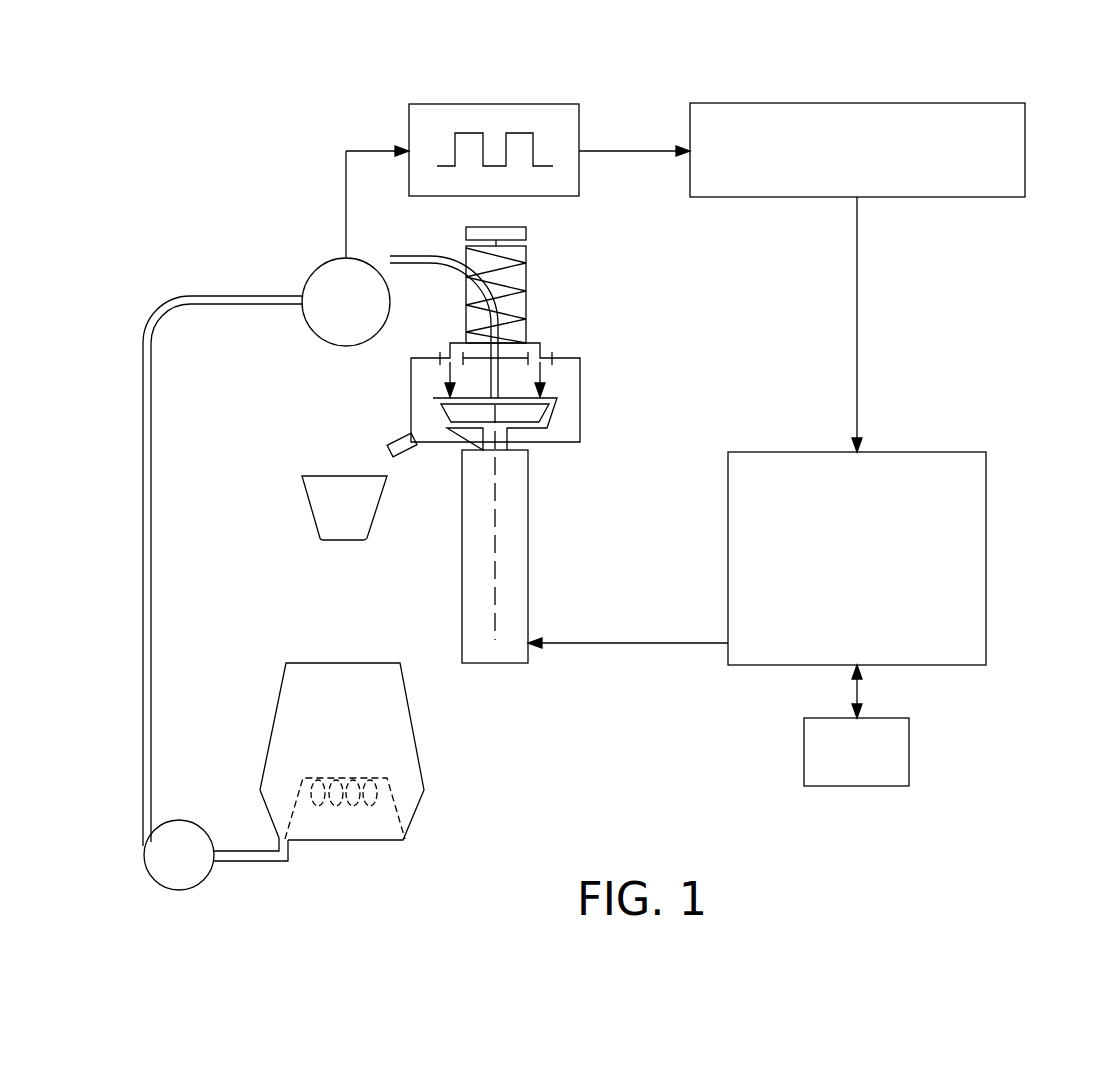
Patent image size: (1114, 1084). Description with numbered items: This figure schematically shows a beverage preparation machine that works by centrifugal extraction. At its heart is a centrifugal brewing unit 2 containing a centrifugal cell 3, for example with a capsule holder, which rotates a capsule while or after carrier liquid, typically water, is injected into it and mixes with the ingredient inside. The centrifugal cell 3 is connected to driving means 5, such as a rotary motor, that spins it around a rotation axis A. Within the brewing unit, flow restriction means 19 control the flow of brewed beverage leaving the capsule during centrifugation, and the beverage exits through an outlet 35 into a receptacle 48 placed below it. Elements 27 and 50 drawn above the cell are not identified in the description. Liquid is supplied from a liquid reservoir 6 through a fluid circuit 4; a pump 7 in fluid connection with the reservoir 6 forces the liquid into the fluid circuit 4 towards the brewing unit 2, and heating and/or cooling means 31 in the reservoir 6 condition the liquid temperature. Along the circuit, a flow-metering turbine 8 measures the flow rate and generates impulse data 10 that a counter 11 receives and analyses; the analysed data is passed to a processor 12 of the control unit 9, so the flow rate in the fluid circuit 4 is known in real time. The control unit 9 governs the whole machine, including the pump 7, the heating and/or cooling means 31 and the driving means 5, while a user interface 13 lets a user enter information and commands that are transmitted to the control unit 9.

The centrifugal brewing unit 2 is at (523, 427).
The centrifugal cell 3 is at (566, 426).
The fluid circuit 4 is at (222, 295).
The driving means 5 is at (496, 663).
The liquid reservoir 6 is at (424, 775).
The pump 7 is at (178, 890).
The flow-metering turbine 8 is at (327, 259).
The control unit 9 is at (1049, 245).
The impulse data 10 is at (440, 104).
The counter 11 is at (1025, 155).
The processor 12 is at (986, 572).
The user interface 13 is at (909, 755).
The flow restriction means 19 is at (540, 372).
The spring 27 is at (526, 275).
The heating and/or cooling means 31 is at (292, 812).
The outlet 35 is at (397, 438).
The receptacle 48 is at (310, 512).
The plate 50 is at (546, 235).
The rotation axis A is at (495, 572).